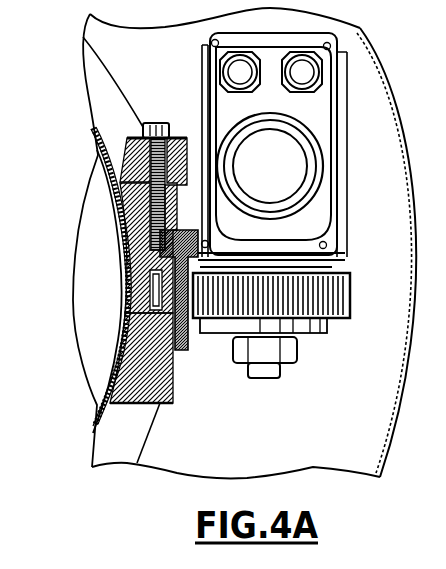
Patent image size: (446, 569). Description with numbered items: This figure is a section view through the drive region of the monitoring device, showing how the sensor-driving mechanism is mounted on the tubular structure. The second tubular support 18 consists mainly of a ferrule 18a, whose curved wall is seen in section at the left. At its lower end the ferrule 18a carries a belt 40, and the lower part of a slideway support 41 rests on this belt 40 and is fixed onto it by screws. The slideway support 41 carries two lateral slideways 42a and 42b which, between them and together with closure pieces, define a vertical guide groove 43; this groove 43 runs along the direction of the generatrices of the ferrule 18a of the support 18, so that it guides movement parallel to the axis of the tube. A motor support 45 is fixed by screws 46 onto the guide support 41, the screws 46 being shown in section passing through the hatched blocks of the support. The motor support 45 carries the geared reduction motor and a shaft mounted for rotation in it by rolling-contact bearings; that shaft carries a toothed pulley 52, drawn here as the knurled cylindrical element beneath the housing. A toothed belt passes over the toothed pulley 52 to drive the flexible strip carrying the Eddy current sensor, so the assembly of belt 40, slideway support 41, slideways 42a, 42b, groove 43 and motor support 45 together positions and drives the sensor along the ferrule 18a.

The second tubular support 18 is at (97, 385).
The ferrule 18a is at (121, 345).
The belt 40 is at (100, 458).
The slideway support 41 is at (125, 405).
The lateral slideway 42a is at (180, 352).
The lateral slideway 42b is at (205, 244).
The vertical guide groove 43 is at (127, 262).
The motor support 45 is at (342, 172).
The screws 46 is at (157, 123).
The toothed pulley 52 is at (350, 293).